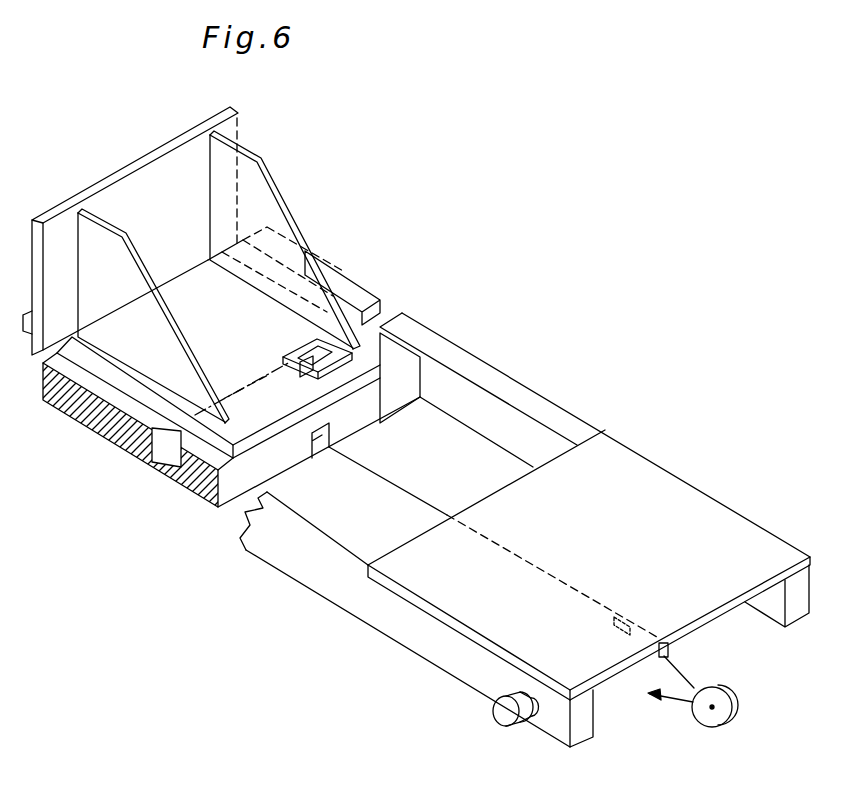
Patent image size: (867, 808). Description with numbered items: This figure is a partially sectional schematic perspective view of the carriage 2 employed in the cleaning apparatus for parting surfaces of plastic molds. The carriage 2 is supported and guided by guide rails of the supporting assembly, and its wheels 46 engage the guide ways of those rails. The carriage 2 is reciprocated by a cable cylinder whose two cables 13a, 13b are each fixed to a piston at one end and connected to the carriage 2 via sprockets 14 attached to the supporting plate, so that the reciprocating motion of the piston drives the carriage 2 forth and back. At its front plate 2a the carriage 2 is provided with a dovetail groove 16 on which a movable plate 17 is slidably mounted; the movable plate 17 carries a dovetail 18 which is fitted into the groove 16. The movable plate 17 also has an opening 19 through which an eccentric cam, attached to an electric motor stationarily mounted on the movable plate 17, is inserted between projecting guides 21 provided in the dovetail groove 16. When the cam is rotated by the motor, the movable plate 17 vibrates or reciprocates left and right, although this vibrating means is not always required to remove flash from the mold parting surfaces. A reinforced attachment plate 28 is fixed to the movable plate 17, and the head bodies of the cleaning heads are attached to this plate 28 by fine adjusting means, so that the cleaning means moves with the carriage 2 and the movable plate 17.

The carriage 2 is at (578, 416).
The front plate 2a is at (70, 407).
The cable 13a is at (386, 479).
The cable 13b is at (678, 706).
The sprocket 14 is at (722, 713).
The dovetail groove 16 is at (180, 432).
The movable plate 17 is at (232, 340).
The dovetail 18 is at (182, 432).
The opening 19 is at (310, 357).
The projecting guides 21 is at (353, 388).
The reinforced attachment plate 28 is at (110, 182).
The wheel 46 is at (506, 724).